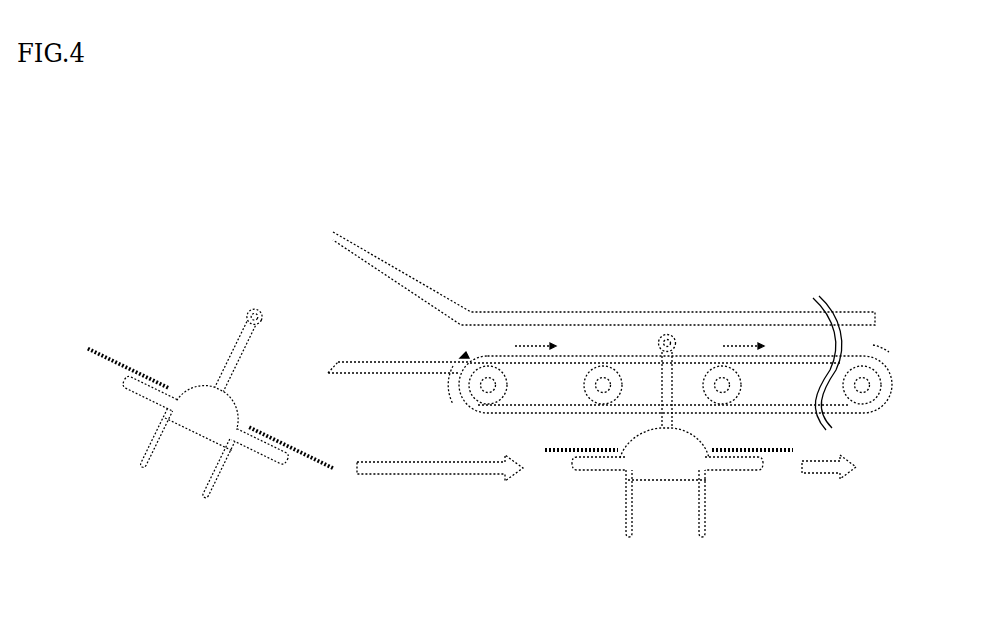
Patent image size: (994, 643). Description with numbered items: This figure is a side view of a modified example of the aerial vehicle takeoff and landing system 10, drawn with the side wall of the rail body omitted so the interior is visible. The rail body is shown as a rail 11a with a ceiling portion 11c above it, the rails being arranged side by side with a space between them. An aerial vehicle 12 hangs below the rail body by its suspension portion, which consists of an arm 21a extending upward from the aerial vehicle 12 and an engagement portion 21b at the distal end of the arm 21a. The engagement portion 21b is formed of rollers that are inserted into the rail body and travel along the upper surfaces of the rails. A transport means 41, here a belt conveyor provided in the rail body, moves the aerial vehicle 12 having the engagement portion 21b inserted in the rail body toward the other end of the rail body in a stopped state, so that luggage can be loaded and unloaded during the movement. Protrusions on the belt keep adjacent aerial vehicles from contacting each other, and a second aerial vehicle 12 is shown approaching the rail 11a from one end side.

The aerial vehicle takeoff and landing system 10 is at (850, 200).
The rail 11a is at (368, 362).
The ceiling portion 11c is at (508, 312).
The aerial vehicle 12 is at (707, 480).
The arm 21a is at (663, 391).
The engagement portion 21b is at (667, 334).
The transport means 41 is at (535, 412).